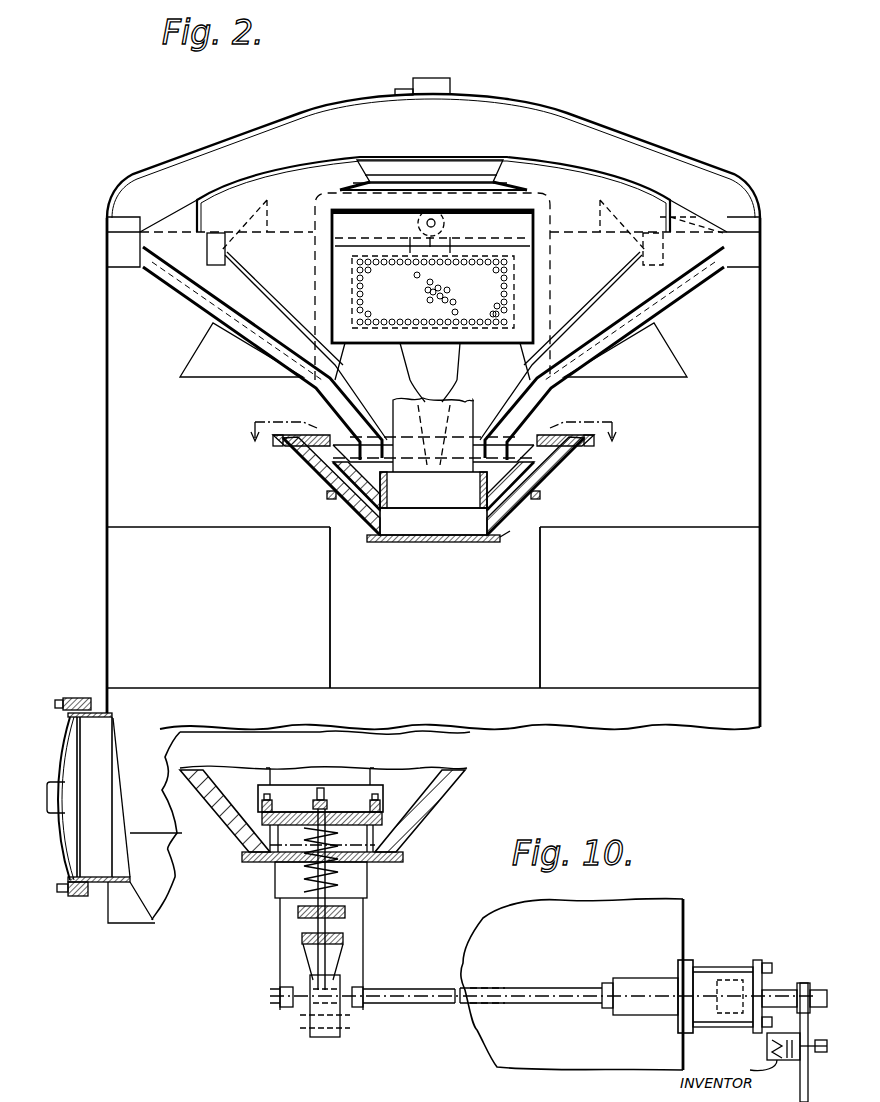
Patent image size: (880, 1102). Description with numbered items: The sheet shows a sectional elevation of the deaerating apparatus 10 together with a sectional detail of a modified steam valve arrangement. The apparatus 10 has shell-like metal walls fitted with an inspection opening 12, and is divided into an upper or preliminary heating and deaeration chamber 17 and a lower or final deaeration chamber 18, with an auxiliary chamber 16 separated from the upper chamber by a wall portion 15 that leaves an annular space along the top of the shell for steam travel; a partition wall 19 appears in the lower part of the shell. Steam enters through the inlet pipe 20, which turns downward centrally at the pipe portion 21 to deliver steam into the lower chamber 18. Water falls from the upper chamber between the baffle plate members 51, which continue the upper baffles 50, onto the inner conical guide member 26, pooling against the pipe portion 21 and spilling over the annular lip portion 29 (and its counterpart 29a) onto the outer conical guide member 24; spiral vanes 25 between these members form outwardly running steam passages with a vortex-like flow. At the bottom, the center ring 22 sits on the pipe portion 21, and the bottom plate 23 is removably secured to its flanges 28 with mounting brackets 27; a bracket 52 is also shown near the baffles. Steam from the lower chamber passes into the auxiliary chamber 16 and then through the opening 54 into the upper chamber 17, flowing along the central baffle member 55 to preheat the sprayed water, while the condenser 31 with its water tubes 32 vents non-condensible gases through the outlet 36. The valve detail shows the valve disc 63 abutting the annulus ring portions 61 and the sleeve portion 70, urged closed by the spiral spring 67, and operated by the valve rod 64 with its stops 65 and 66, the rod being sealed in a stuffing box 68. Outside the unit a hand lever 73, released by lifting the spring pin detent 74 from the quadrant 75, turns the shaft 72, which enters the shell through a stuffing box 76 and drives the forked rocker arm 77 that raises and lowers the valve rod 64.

In FIG. 2, the deaerating apparatus 10 is at (233, 605).
In FIG. 10, the deaerating apparatus 10 is at (683, 908).
In FIG. 2, the inspection opening 12 is at (62, 762).
In FIG. 2, the wall portion 15 is at (630, 178).
In FIG. 2, the auxiliary chamber 16 is at (604, 157).
In FIG. 2, the upper deaeration chamber 17 is at (590, 205).
In FIG. 2, the lower deaeration chamber 18 is at (676, 447).
In FIG. 2, the partition wall 19 is at (541, 590).
In FIG. 2, the steam inlet pipe 20 is at (452, 405).
In FIG. 2, the steam inlet pipe portion 21 is at (433, 490).
In FIG. 2, the center ring 22 is at (346, 504).
In FIG. 2, the bottom plate 23 is at (436, 545).
In FIG. 2, the outer conical guide member 24 is at (503, 516).
In FIG. 2, the spiral vanes 25 is at (522, 478).
In FIG. 2, the inner conical guide member 26 is at (535, 460).
In FIG. 2, the mounting brackets 27 is at (543, 495).
In FIG. 2, the flanges 28 is at (503, 538).
In FIG. 2, the annular lip portion 29 is at (334, 440).
In FIG. 2, the right ring plate 29a is at (612, 422).
In FIG. 2, the condenser 31 is at (402, 305).
In FIG. 2, the water tubes 32 is at (492, 312).
In FIG. 2, the gas outlet 36 is at (445, 226).
In FIG. 2, the upper baffles 50 is at (247, 288).
In FIG. 2, the baffle plate members 51 is at (525, 440).
In FIG. 2, the deflector plate 52 is at (668, 358).
In FIG. 2, the opening 54 is at (687, 228).
In FIG. 2, the central baffle member 55 is at (445, 187).
In FIG. 2, the annulus ring portions 61 is at (262, 840).
In FIG. 2, the valve disc 63 is at (300, 865).
In FIG. 2, the valve rod 64 is at (328, 960).
In FIG. 2, the stop 65 is at (332, 788).
In FIG. 2, the stop 66 is at (302, 888).
In FIG. 2, the spiral spring 67 is at (347, 908).
In FIG. 2, the stuffing box 68 is at (345, 936).
In FIG. 2, the sleeve portion 70 is at (370, 883).
In FIG. 10, the shaft 72 is at (529, 990).
In FIG. 10, the hand lever 73 is at (808, 1078).
In FIG. 10, the spring pin detent 74 is at (765, 1047).
In FIG. 10, the quadrant 75 is at (770, 1070).
In FIG. 10, the stuffing box 76 is at (719, 980).
In FIG. 2, the rocker arm 77 is at (308, 1005).